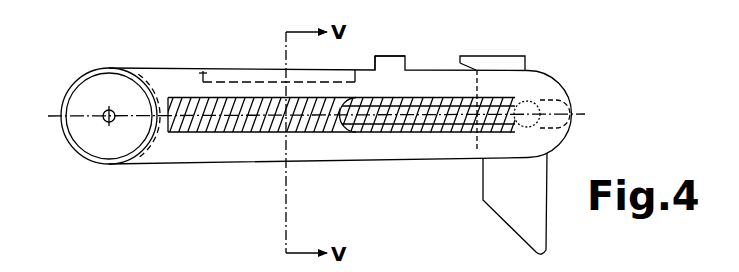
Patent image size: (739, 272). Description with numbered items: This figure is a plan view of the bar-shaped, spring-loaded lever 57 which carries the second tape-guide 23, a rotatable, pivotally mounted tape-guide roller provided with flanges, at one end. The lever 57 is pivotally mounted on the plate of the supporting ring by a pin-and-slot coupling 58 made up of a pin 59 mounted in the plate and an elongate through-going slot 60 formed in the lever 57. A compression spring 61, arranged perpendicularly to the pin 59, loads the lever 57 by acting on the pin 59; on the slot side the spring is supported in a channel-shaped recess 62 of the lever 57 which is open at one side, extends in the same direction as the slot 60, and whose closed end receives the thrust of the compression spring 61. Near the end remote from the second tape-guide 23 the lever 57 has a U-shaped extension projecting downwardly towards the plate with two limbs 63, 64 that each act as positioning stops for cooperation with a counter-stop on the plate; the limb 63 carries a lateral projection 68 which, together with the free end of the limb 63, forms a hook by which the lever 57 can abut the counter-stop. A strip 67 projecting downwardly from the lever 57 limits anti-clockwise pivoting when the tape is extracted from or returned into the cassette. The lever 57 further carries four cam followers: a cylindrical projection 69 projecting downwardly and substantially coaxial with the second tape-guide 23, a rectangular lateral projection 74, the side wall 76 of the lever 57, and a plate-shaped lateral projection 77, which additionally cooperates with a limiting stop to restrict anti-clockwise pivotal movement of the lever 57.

The second tape-guide 23 is at (91, 86).
The lever 57 is at (266, 165).
The pin-and-slot coupling 58 is at (538, 96).
The pin 59 is at (565, 103).
The slot 60 is at (557, 142).
The compression spring 61 is at (366, 124).
The channel-shaped recess 62 is at (567, 124).
The limb 63 is at (482, 85).
The limb 64 is at (490, 144).
The strip 67 is at (203, 72).
The lateral projection 68 is at (474, 62).
The cylindrical projection 69 is at (152, 150).
The rectangular lateral projection 74 is at (388, 54).
The side wall 76 is at (362, 70).
The plate-shaped lateral projection 77 is at (512, 222).